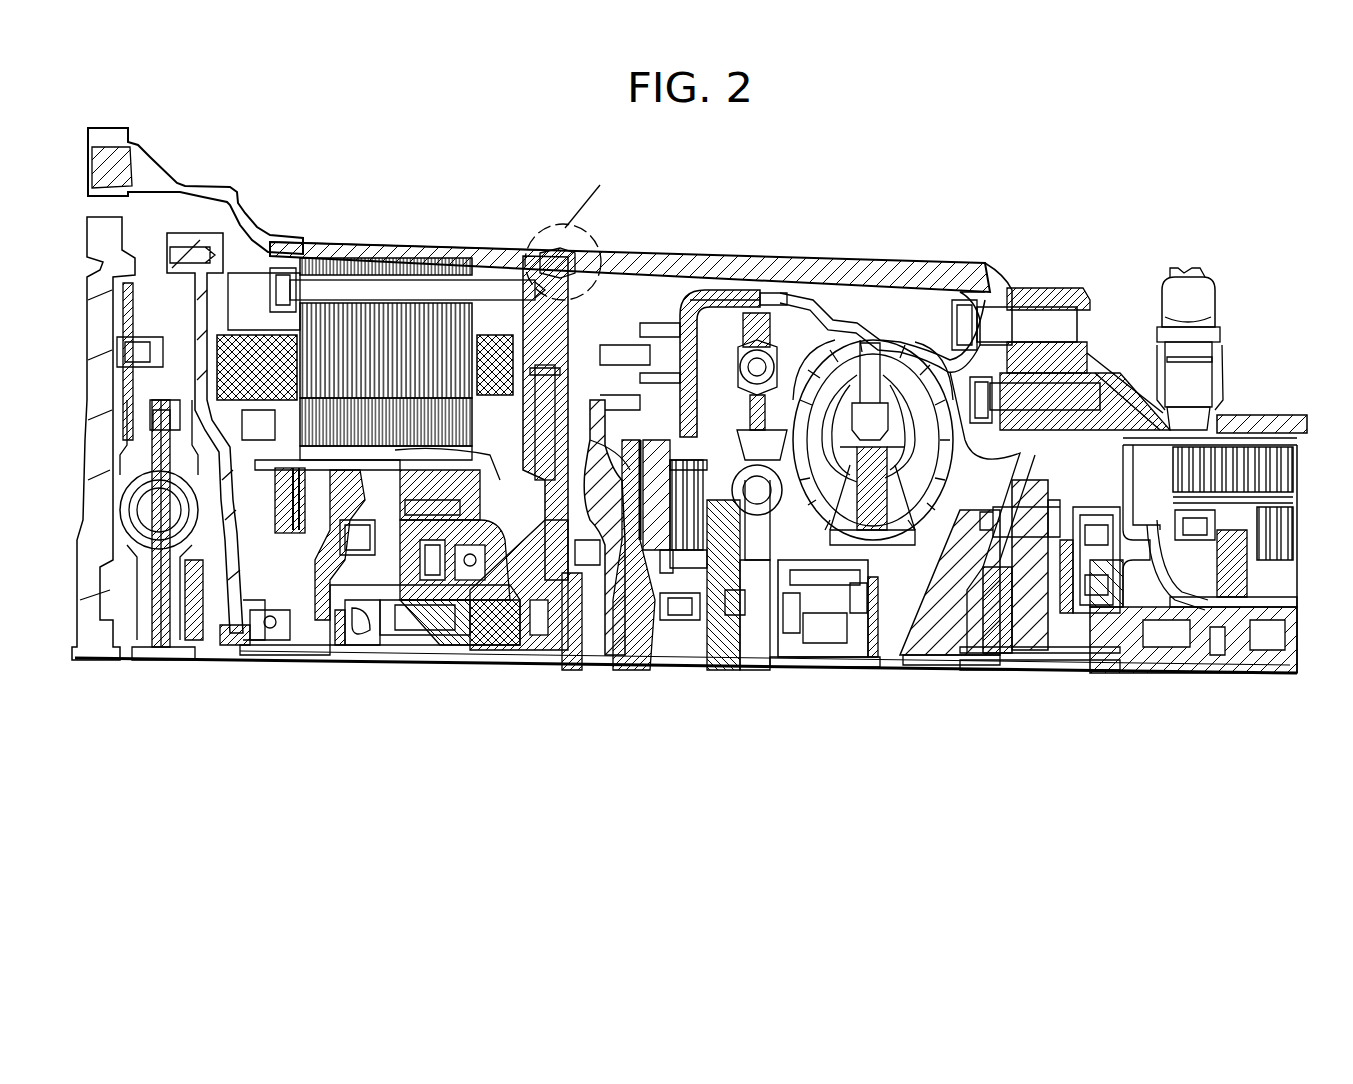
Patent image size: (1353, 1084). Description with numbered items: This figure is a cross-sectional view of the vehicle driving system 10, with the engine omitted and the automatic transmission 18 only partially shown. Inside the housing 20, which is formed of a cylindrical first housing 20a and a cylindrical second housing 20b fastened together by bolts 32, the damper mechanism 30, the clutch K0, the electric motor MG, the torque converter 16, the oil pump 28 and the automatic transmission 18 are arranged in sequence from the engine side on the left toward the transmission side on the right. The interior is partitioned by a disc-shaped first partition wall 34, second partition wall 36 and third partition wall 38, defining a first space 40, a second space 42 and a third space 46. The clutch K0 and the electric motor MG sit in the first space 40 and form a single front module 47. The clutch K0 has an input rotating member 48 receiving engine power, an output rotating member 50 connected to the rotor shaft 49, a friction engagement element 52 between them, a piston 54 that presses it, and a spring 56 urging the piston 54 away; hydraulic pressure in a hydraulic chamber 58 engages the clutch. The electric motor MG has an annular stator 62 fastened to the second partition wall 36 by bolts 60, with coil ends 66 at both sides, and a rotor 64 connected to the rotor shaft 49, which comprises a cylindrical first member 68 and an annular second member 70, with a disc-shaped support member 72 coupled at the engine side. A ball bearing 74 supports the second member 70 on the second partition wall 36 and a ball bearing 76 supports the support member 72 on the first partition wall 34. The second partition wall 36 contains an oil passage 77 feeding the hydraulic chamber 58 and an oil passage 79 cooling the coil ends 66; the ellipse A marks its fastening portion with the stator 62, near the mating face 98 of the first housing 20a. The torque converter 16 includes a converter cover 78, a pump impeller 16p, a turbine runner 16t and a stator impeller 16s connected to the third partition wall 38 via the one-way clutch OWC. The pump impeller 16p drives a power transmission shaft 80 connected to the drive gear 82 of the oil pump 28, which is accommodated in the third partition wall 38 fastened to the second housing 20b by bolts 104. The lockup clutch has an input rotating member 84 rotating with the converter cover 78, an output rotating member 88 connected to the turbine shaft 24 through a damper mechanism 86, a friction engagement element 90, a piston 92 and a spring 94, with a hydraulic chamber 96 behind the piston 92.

The vehicle driving system 10 is at (1133, 205).
The torque converter 16 is at (888, 310).
The pump impeller 16p is at (900, 370).
The stator impeller 16s is at (885, 500).
The turbine runner 16t is at (822, 378).
The automatic transmission 18 is at (1160, 688).
The housing 20 is at (676, 227).
The first housing 20a is at (330, 240).
The second housing 20b is at (1255, 420).
The turbine shaft 24 is at (720, 668).
The oil pump 28 is at (975, 660).
The damper mechanism 30 is at (150, 672).
The bolts 32 is at (1020, 305).
The first partition wall 34 is at (200, 340).
The second partition wall 36 is at (590, 415).
The third partition wall 38 is at (1027, 463).
The first space 40 is at (248, 262).
The second space 42 is at (628, 286).
The third space 46 is at (1102, 425).
The front module 47 is at (310, 670).
The input rotating member 48 is at (320, 595).
The rotor shaft 49 is at (262, 420).
The output rotating member 50 is at (445, 498).
The friction engagement element 52 is at (270, 500).
The piston 54 is at (378, 645).
The spring 56 is at (330, 545).
The hydraulic chamber 58 is at (398, 640).
The bolts 60 is at (374, 290).
The stator 62 is at (437, 262).
The rotor 64 is at (455, 408).
The coil ends 66 is at (238, 350).
The first member 68 is at (458, 465).
The second member 70 is at (470, 645).
The support member 72 is at (258, 548).
The ball bearing 74 is at (498, 520).
The ball bearing 76 is at (268, 642).
The oil passage 77 is at (510, 650).
The converter cover 78 is at (732, 298).
The oil passage 79 is at (560, 362).
The power transmission shaft 80 is at (912, 665).
The drive gear 82 is at (1000, 655).
The input rotating member 84 is at (752, 640).
The damper mechanism 86 is at (780, 332).
The output rotating member 88 is at (706, 430).
The friction engagement element 90 is at (680, 440).
The piston 92 is at (635, 512).
The spring 94 is at (670, 655).
The hydraulic chamber 96 is at (600, 655).
The mating face 98 is at (548, 262).
The bolts 104 is at (1068, 385).
The ellipse A is at (589, 197).
The electric motor MG is at (282, 255).
The clutch K0 is at (262, 565).
The one-way clutch OWC is at (830, 662).